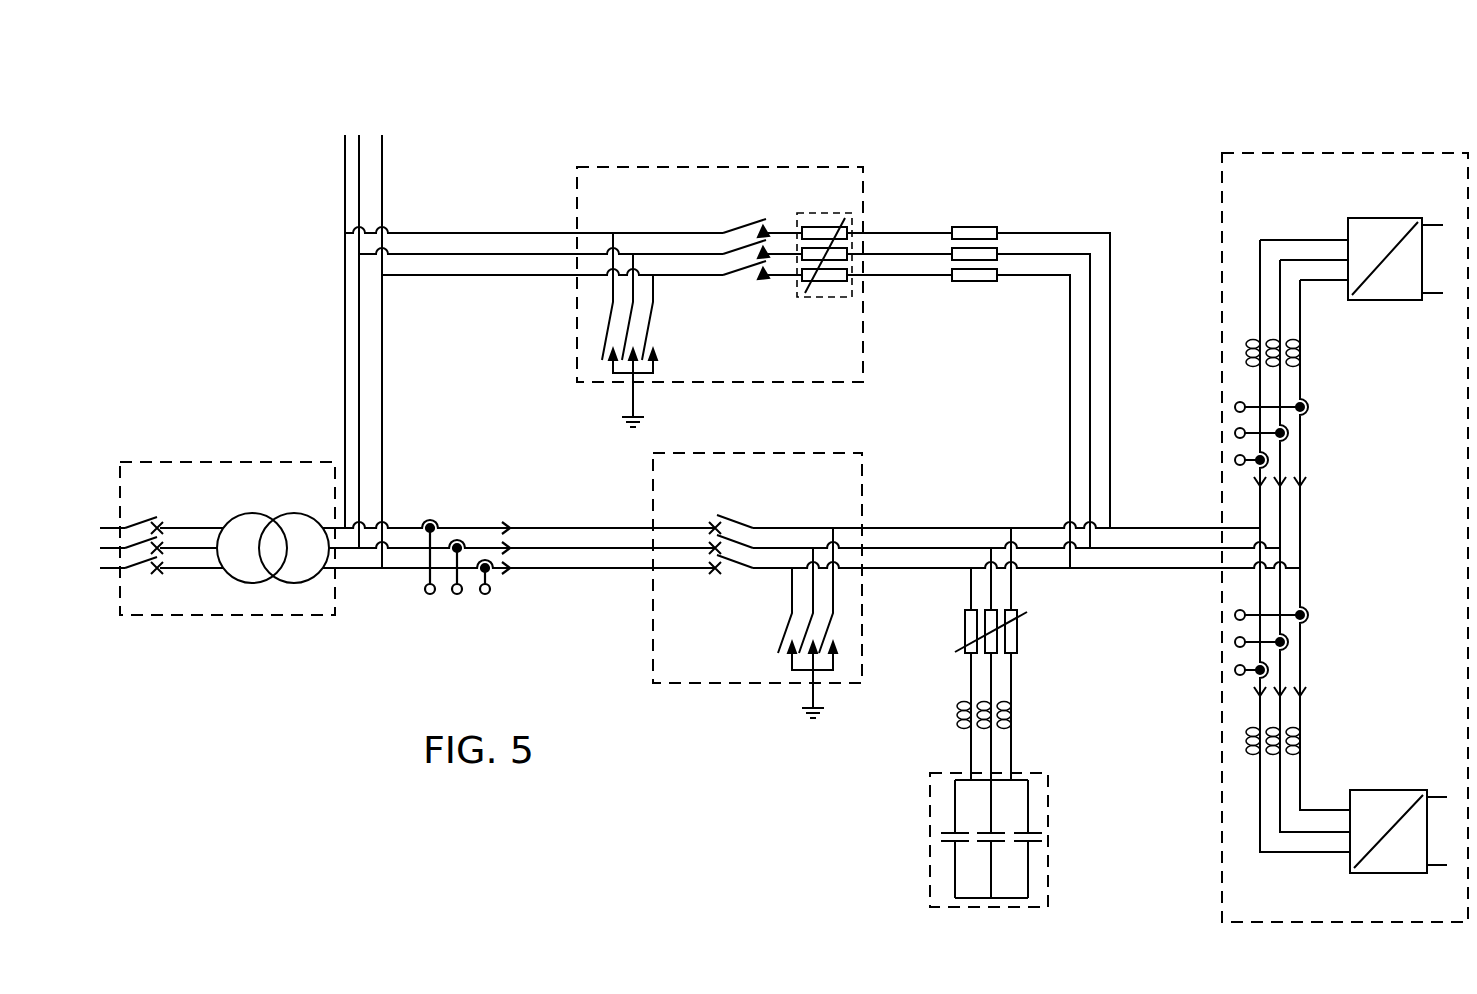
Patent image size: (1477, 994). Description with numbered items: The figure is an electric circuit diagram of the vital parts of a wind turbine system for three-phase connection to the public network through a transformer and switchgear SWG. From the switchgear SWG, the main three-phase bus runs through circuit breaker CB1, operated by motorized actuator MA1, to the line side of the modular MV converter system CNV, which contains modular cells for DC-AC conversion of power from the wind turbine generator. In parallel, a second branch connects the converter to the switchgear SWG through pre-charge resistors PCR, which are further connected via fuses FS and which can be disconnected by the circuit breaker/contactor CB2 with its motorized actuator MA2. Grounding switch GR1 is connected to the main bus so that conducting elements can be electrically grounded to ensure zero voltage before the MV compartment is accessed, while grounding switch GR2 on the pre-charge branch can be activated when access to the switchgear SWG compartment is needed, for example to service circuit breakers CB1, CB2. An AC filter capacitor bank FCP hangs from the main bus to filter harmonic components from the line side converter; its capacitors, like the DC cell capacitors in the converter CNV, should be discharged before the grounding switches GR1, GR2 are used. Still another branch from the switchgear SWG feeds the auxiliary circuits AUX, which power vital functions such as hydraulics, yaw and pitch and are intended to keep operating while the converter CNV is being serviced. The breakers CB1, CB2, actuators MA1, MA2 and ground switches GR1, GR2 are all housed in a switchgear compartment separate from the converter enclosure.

The auxiliary circuits AUX is at (368, 104).
The switchgear SWG is at (227, 538).
The circuit breaker/contactor CB2 is at (718, 230).
The motorized actuator MA2 is at (720, 274).
The grounding switch GR2 is at (670, 330).
The fuses FS is at (823, 297).
The pre-charge resistors PCR is at (1030, 375).
The circuit breaker CB1 is at (710, 519).
The motorized actuator MA1 is at (757, 568).
The grounding switch GR1 is at (766, 623).
The AC filter capacitor bank FCP is at (1048, 807).
The MV converter system CNV is at (1345, 537).